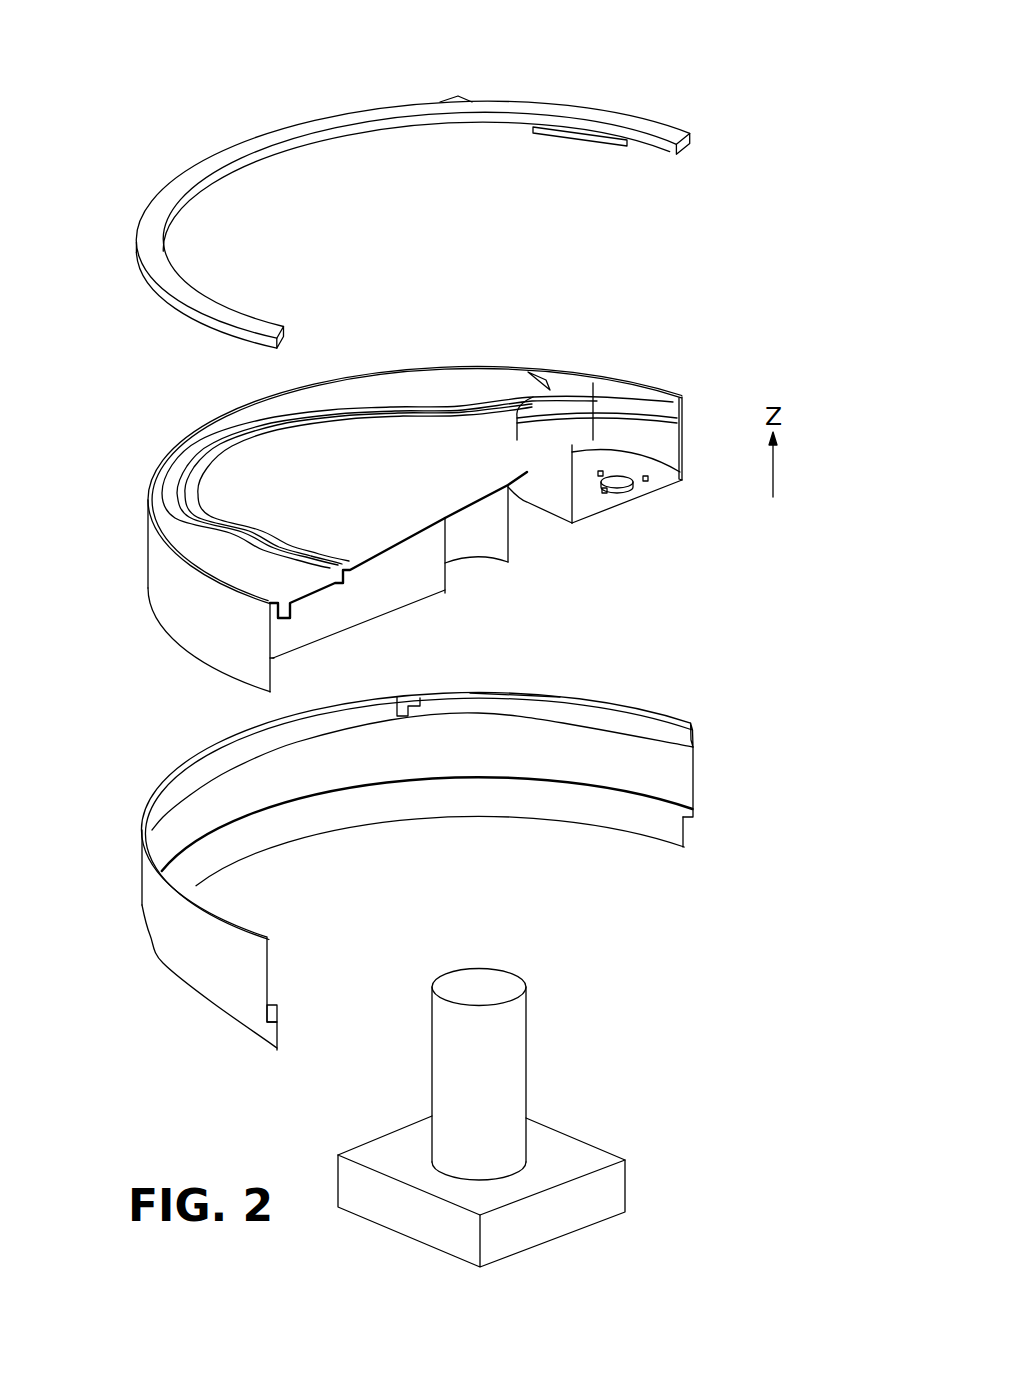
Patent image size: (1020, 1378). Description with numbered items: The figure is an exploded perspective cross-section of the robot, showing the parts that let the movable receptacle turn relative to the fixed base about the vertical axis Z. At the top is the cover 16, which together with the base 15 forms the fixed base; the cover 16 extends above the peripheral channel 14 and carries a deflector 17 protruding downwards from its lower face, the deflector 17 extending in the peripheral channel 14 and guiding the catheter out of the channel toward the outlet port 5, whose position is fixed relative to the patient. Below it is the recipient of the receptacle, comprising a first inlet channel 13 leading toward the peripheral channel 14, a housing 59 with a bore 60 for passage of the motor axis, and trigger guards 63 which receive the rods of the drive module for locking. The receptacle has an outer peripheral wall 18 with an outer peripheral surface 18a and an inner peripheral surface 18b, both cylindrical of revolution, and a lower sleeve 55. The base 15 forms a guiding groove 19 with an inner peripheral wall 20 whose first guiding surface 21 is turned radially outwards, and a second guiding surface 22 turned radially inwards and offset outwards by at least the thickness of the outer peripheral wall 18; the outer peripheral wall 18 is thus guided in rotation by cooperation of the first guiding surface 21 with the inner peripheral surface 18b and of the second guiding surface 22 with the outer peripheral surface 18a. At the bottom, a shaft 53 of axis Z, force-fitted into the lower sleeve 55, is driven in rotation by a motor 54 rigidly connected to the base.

The outlet port 5 is at (458, 98).
The first inlet channel 13 is at (548, 372).
The peripheral channel 14 is at (163, 466).
The base 15 is at (449, 885).
The cover 16 is at (412, 185).
The deflector 17 is at (565, 136).
The outer peripheral wall 18 is at (414, 515).
The outer peripheral surface 18a is at (207, 637).
The inner peripheral surface 18b is at (681, 481).
The guiding groove 19 is at (662, 767).
The inner peripheral wall 20 is at (620, 788).
The first guiding surface 21 is at (278, 1013).
The second guiding surface 22 is at (641, 721).
The shaft 53 is at (508, 1035).
The motor 54 is at (608, 1188).
The lower sleeve 55 is at (478, 537).
The housing 59 is at (588, 496).
The bore 60 is at (620, 478).
The trigger guards 63 is at (650, 477).